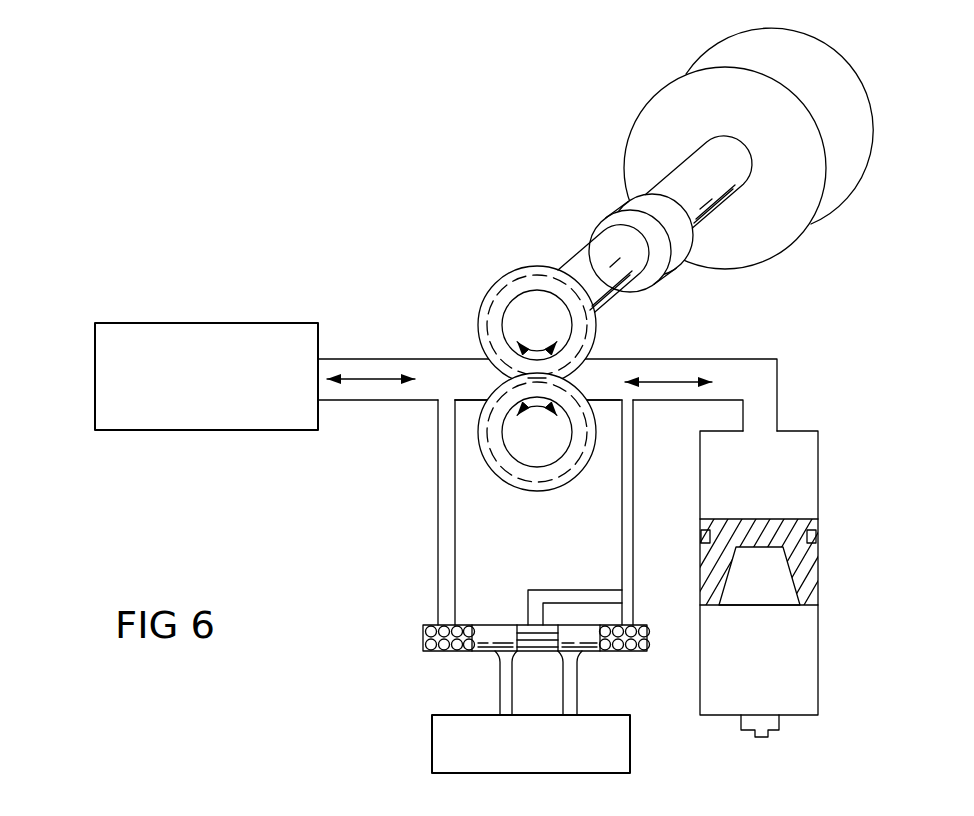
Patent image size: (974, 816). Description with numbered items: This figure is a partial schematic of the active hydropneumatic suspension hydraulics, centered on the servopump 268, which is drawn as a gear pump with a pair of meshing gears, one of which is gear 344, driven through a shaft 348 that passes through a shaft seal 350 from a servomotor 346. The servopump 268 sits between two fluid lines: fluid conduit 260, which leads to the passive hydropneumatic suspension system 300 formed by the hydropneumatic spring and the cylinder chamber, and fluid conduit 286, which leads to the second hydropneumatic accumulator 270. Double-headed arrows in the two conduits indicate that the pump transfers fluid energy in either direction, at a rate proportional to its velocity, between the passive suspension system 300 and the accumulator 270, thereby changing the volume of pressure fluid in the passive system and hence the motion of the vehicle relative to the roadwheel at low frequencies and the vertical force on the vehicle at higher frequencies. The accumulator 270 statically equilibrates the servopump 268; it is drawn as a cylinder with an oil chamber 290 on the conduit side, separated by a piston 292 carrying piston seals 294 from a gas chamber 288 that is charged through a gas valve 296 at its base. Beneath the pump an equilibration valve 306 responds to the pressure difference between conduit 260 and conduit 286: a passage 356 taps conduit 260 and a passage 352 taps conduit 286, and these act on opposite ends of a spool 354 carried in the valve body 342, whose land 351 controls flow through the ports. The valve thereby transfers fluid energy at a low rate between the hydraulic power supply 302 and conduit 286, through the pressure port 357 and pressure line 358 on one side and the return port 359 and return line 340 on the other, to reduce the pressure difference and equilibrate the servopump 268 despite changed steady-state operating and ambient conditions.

The fluid passage 260 is at (432, 372).
The servopump 268 is at (523, 341).
The second hydropneumatic accumulator 270 is at (807, 563).
The fluid conduit 286 is at (745, 377).
The gas chamber 288 is at (805, 692).
The oil chamber 290 is at (802, 497).
The piston 292 is at (811, 595).
The piston seal 294 is at (818, 535).
The gas charging valve 296 is at (766, 734).
The passive hydropneumatic suspension system 300 is at (187, 323).
The hydraulic power supply 302 is at (425, 748).
The equilibration valve 306 is at (519, 557).
The return line 340 is at (505, 705).
The valve body 342 is at (588, 592).
The gear 344 is at (480, 327).
The servomotor 346 is at (670, 100).
The shaft 348 is at (738, 187).
The shaft seal 350 is at (633, 203).
The spool land 351 is at (585, 636).
The passage 352 is at (627, 535).
The spool 354 is at (545, 615).
The passage 356 is at (438, 517).
The pressure port 357 is at (578, 658).
The pressure line 358 is at (578, 706).
The return port 359 is at (498, 660).